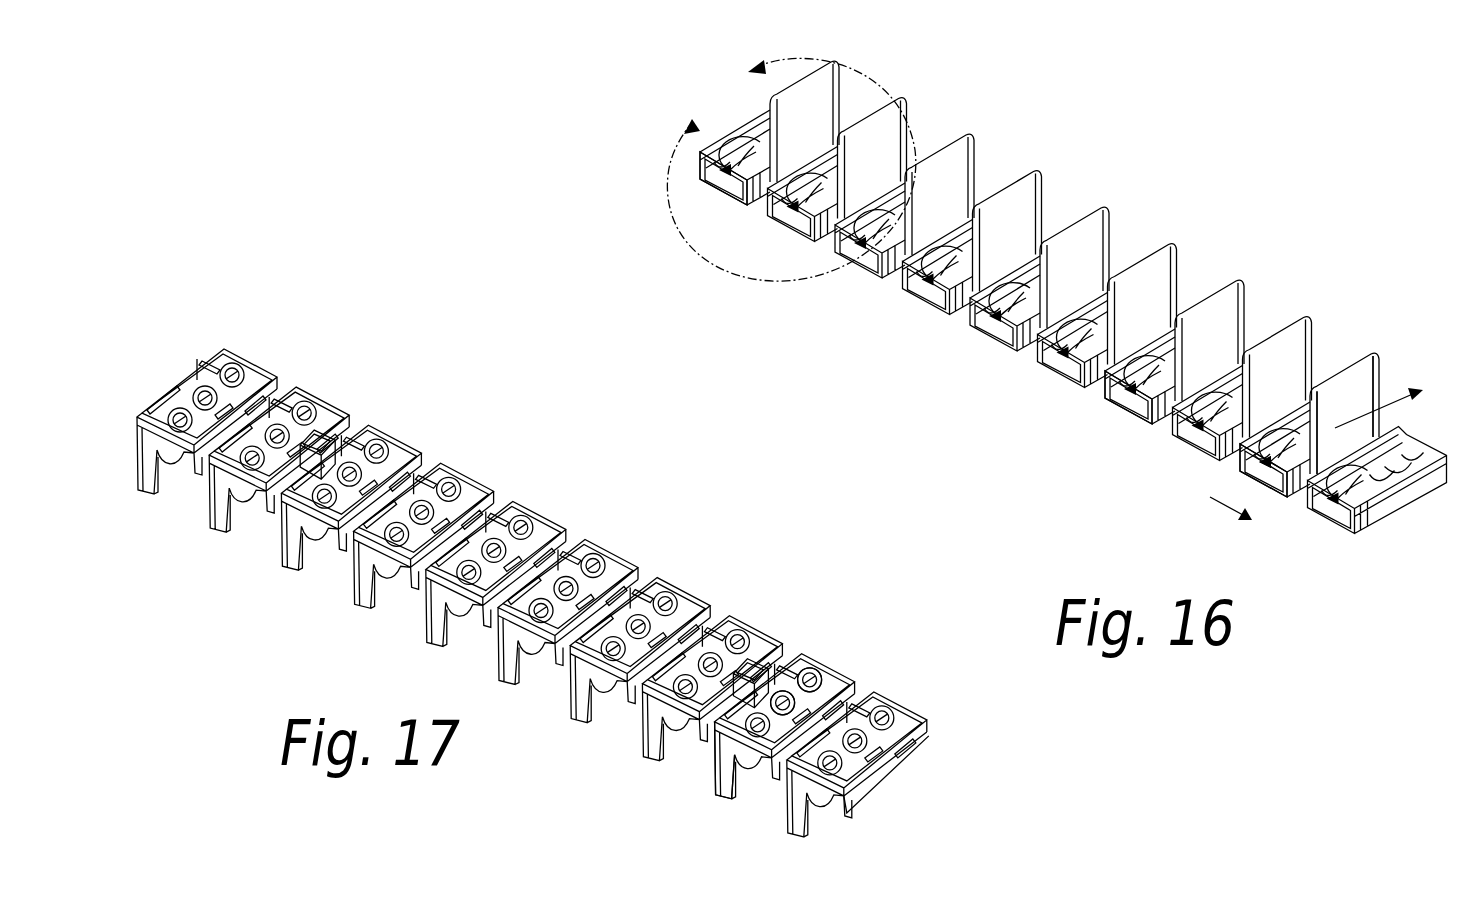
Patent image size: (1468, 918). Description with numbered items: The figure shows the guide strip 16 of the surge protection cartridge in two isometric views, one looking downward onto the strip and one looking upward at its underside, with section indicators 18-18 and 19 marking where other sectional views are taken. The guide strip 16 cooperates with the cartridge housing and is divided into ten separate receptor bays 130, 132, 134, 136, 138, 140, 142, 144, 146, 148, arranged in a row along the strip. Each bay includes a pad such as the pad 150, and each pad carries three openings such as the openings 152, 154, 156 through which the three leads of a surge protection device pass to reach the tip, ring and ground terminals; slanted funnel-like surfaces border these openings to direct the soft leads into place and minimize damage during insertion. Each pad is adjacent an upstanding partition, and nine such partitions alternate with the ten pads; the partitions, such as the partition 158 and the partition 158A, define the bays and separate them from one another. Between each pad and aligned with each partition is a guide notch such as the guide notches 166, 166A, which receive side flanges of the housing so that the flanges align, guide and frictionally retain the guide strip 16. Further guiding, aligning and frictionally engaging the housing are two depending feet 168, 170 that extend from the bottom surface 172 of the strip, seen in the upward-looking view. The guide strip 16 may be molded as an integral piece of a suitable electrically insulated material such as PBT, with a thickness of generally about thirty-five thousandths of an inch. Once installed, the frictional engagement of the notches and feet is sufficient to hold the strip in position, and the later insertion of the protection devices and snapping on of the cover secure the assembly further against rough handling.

In FIG. 16, the guide strip 16 is at (1046, 318).
In FIG. 17, the guide strip 16 is at (533, 606).
In FIG. 16, the receptor bay 130 is at (712, 186).
In FIG. 16, the receptor bay 132 is at (788, 204).
In FIG. 16, the receptor bay 134 is at (852, 240).
In FIG. 16, the receptor bay 136 is at (920, 274).
In FIG. 16, the receptor bay 138 is at (990, 310).
In FIG. 16, the receptor bay 140 is at (1060, 345).
In FIG. 16, the receptor bay 142 is at (1130, 395).
In FIG. 16, the receptor bay 144 is at (1192, 432).
In FIG. 16, the receptor bay 146 is at (1250, 505).
In FIG. 16, the receptor bay 148 is at (1318, 505).
In FIG. 16, the pad 150 is at (1263, 463).
In FIG. 17, the pad 150 is at (752, 780).
In FIG. 16, the opening 152 is at (1265, 497).
In FIG. 17, the opening 152 is at (815, 678).
In FIG. 16, the opening 154 is at (1298, 430).
In FIG. 17, the opening 154 is at (787, 690).
In FIG. 17, the opening 156 is at (707, 730).
In FIG. 16, the partition 158 is at (1365, 380).
In FIG. 16, the partition 158A is at (822, 97).
In FIG. 16, the guide notch 166 is at (1095, 392).
In FIG. 17, the guide notch 166 is at (636, 600).
In FIG. 16, the guide notch 166A is at (760, 222).
In FIG. 17, the depending foot 168 is at (348, 440).
In FIG. 17, the depending foot 170 is at (770, 658).
In FIG. 17, the bottom surface 172 is at (722, 640).
In FIG. 16, the section line 19- 19 is at (1329, 464).
In FIG. 16, the section line 18-18 is at (791, 169).